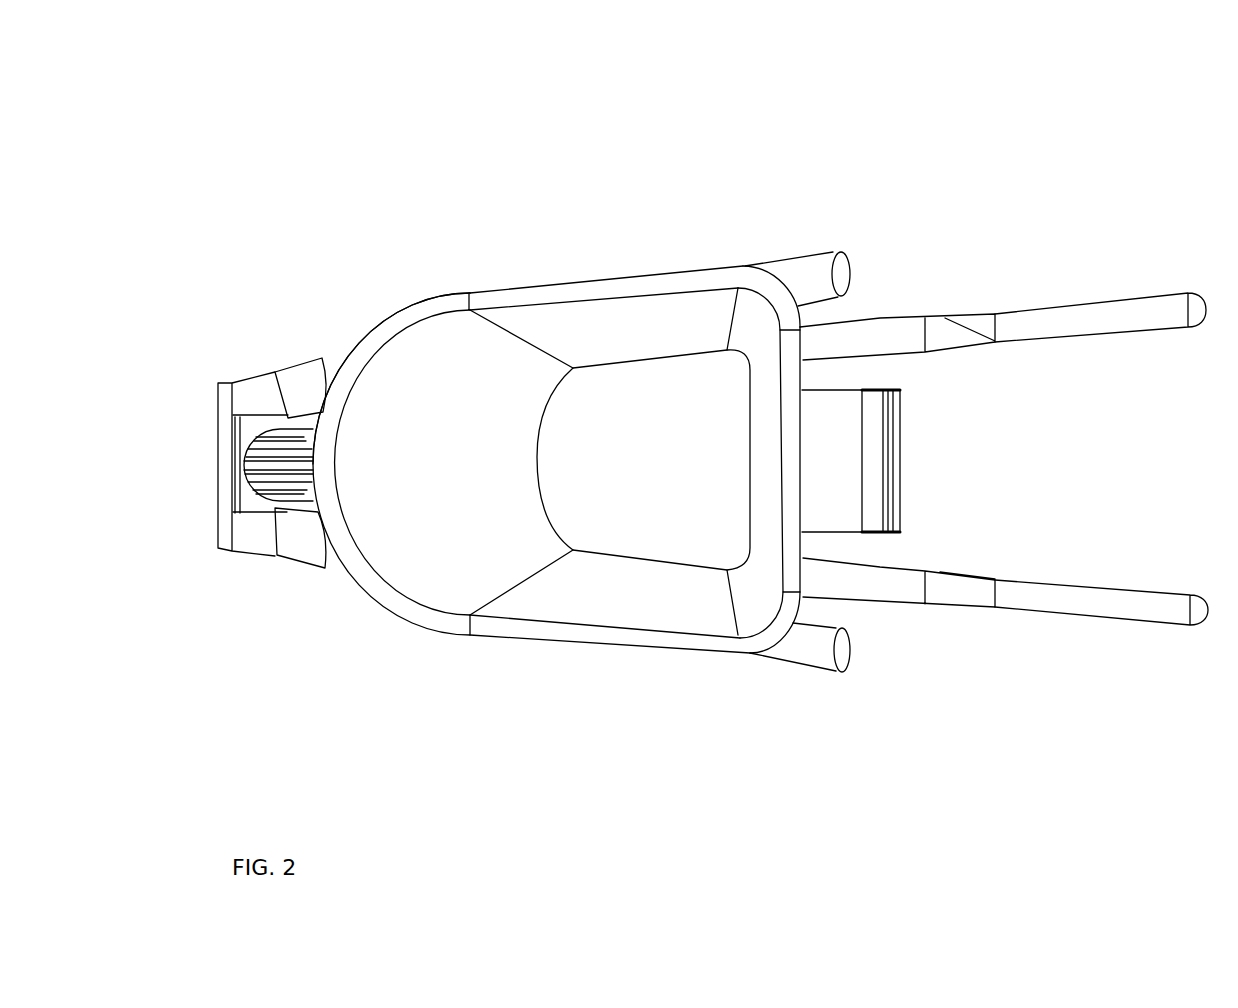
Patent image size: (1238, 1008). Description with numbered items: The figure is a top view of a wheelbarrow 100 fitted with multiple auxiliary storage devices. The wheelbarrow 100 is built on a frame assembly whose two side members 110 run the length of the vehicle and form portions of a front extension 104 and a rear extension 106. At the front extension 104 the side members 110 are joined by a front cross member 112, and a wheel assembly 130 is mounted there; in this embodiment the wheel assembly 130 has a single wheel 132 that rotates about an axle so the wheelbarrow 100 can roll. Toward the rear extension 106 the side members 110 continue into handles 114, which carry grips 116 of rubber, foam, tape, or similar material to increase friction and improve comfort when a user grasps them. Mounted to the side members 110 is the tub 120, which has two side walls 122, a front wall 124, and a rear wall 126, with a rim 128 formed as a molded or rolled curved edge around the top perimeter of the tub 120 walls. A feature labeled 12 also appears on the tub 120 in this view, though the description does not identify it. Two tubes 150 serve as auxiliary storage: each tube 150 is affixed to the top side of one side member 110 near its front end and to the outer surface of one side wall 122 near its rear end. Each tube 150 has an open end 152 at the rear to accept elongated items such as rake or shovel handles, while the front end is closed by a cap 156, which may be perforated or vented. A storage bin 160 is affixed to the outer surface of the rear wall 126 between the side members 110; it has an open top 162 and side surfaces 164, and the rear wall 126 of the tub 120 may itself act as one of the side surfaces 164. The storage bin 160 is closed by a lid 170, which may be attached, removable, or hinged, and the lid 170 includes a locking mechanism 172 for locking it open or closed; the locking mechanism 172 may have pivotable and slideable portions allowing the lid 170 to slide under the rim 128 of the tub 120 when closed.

The wheelbarrow 100 is at (1175, 96).
The front extension 104 is at (283, 650).
The rear extension 106 is at (933, 750).
The side members 110 is at (872, 335).
The front cross member 112 is at (223, 458).
The handles 114 is at (1121, 559).
The grips 116 is at (1107, 312).
The seat pocket 12 is at (692, 547).
The tub 120 is at (364, 284).
The side walls 122 is at (570, 317).
The front wall 124 is at (382, 373).
The rear wall 126 is at (750, 310).
The rim 128 is at (427, 310).
The wheel assembly 130 is at (236, 579).
The wheel 132 is at (257, 465).
The tubes 150 is at (790, 267).
The open end 152 is at (875, 268).
The cap 156 is at (287, 373).
The storage bin 160 is at (952, 463).
The open top 162 is at (849, 450).
The side surfaces 164 is at (832, 390).
The lid 170 is at (902, 515).
The locking mechanism 172 is at (918, 386).